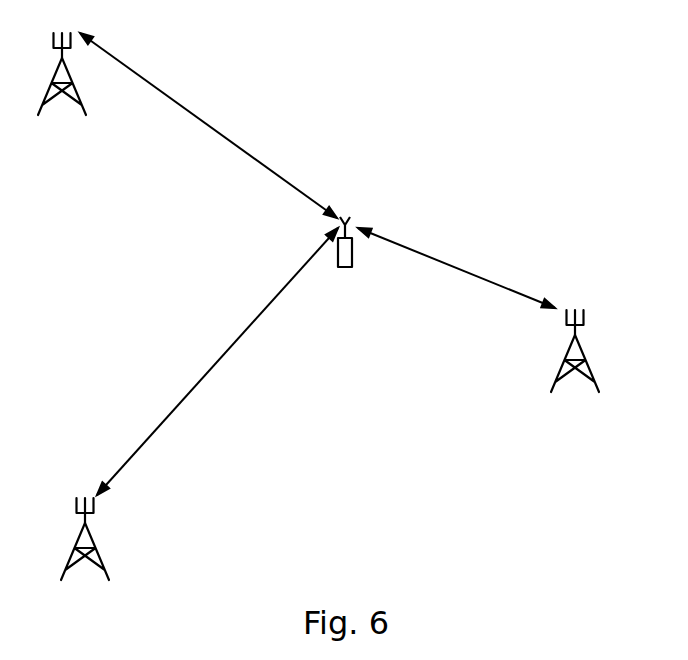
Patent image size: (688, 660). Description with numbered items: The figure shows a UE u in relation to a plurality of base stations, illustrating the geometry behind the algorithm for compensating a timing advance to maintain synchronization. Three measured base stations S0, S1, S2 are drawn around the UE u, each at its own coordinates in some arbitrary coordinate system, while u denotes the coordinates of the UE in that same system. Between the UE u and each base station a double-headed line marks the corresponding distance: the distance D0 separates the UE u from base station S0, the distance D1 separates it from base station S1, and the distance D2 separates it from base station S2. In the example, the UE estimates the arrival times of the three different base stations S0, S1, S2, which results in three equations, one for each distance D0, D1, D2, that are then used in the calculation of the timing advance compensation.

The base station S0 is at (62, 57).
The base station S1 is at (575, 334).
The base station S2 is at (94, 539).
The UE u is at (352, 236).
The distance between the UE and base station D0 is at (208, 125).
The distance between the UE and base station D1 is at (456, 268).
The distance between the UE and base station D2 is at (217, 361).